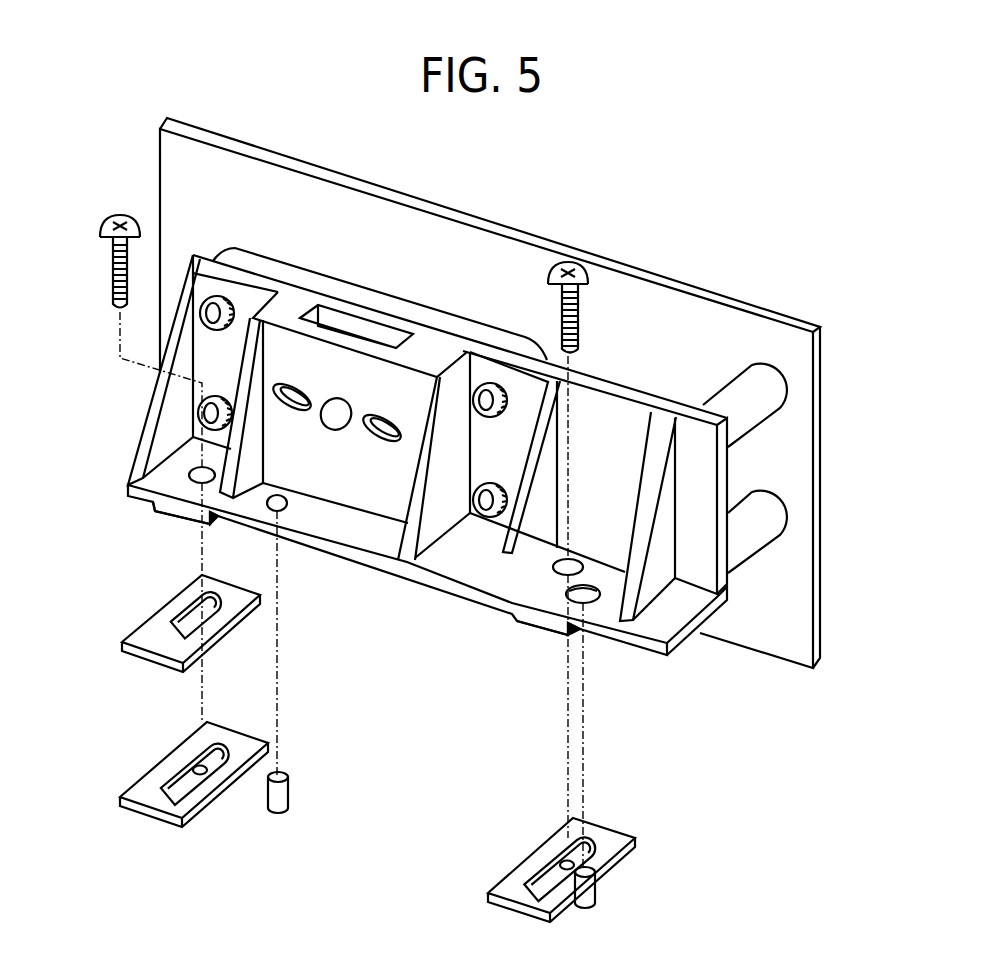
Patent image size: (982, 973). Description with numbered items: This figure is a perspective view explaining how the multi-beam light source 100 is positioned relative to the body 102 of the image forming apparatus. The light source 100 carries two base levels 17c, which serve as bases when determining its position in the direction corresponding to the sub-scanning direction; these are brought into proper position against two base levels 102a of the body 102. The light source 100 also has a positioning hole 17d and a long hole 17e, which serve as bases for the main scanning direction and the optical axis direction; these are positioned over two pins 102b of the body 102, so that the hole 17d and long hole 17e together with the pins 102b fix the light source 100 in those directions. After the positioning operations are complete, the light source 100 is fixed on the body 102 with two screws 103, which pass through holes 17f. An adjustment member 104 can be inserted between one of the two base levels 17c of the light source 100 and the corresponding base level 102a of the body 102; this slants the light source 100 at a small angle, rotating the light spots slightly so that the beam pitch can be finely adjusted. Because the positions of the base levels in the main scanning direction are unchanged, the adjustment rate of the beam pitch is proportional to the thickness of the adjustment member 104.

The multi-beam light source 100 is at (828, 330).
The screws 103 is at (112, 215).
The base levels 17c is at (165, 512).
The positioning hole 17d is at (288, 507).
The long hole 17e is at (589, 601).
The holes 17f is at (195, 470).
The adjustment member 104 is at (124, 642).
The body 102 is at (372, 841).
The base levels 102a is at (137, 797).
The pins 102b is at (290, 795).